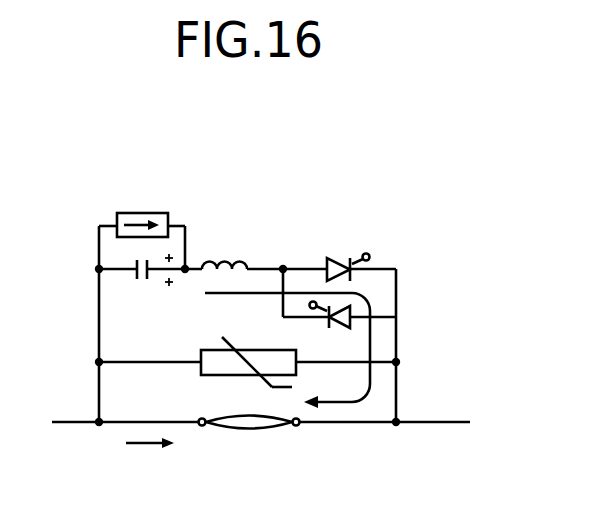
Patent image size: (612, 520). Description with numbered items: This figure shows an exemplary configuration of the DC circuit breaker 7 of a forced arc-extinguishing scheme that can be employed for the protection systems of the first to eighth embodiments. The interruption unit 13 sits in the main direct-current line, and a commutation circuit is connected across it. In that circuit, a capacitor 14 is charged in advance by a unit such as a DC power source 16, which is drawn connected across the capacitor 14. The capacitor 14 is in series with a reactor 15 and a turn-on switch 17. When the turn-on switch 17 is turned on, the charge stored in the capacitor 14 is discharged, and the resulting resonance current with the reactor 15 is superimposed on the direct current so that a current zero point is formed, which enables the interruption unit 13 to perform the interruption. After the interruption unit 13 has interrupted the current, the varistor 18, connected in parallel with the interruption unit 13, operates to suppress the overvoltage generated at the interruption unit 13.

The DC circuit breaker 7 is at (326, 130).
The interruption unit 13 is at (253, 432).
The capacitor 14 is at (134, 277).
The reactor 15 is at (238, 261).
The DC power source 16 is at (157, 212).
The turn-on switch 17 is at (336, 258).
The varistor 18 is at (199, 353).